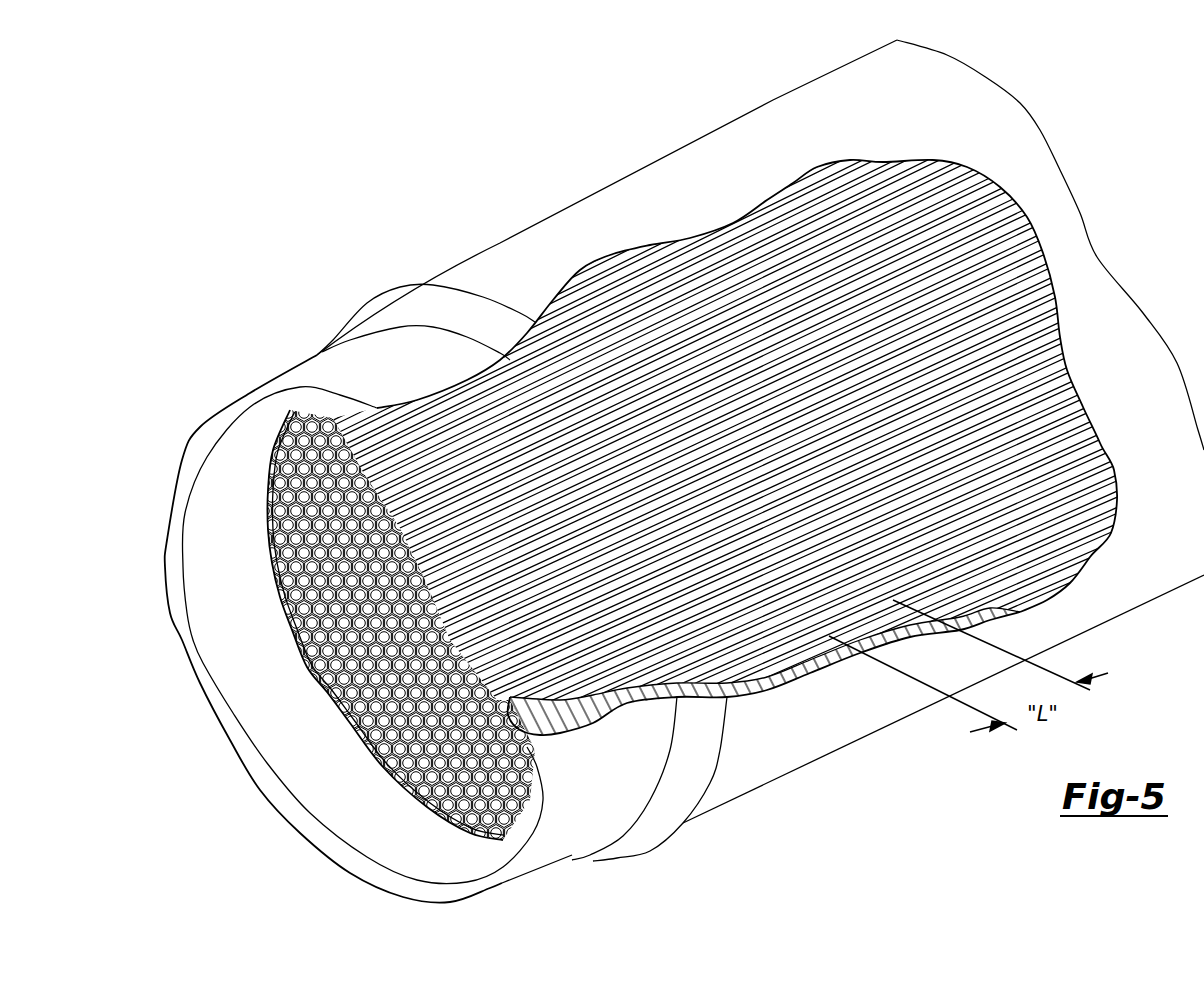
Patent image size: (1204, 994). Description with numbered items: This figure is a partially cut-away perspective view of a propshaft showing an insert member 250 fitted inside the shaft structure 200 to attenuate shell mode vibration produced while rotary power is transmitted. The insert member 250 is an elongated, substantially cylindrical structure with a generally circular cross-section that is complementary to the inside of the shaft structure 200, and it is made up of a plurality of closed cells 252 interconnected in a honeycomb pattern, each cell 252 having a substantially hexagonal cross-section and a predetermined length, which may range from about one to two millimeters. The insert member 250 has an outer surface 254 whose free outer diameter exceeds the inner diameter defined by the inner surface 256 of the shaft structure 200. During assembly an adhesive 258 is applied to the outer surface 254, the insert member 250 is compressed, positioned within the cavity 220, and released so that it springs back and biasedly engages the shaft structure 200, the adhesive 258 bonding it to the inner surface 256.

The shaft structure 200 is at (511, 238).
The cavity 220 is at (787, 203).
The insert member 250 is at (693, 269).
The closed cells 252 is at (543, 723).
The outer surface 254 is at (427, 807).
The inner surface 256 is at (1027, 600).
The adhesive 258 is at (345, 738).